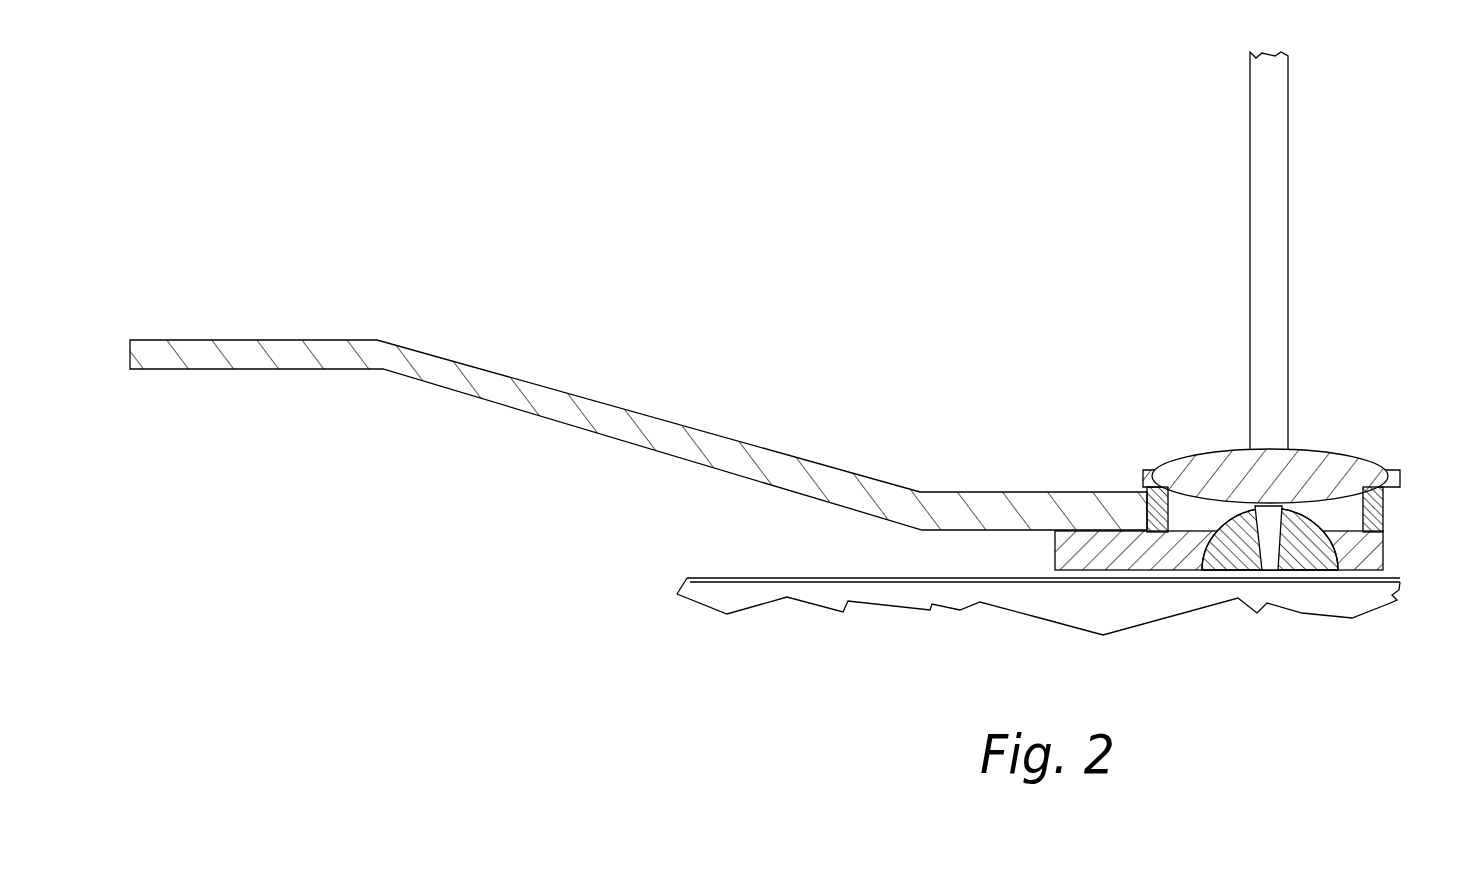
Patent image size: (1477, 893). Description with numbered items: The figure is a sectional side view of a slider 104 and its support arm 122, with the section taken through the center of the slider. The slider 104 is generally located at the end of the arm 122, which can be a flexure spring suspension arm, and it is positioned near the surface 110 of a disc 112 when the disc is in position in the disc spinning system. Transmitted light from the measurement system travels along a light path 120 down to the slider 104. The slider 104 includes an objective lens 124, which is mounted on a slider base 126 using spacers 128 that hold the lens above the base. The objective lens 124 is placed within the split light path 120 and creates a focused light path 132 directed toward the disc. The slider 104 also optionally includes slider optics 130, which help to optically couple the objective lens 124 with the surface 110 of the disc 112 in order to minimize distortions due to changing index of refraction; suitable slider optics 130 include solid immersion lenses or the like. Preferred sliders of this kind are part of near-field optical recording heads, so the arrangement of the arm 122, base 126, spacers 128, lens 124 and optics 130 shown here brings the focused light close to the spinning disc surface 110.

The slider 104 is at (1201, 523).
The surface of the disc 110 is at (800, 578).
The disc 112 is at (725, 593).
The light path 120 is at (1248, 167).
The arm 122 is at (690, 428).
The objective lens 124 is at (1180, 460).
The slider base 126 is at (1053, 548).
The spacers 128 is at (1143, 490).
The slider optics 130 is at (1318, 571).
The focused light path 132 is at (1222, 494).